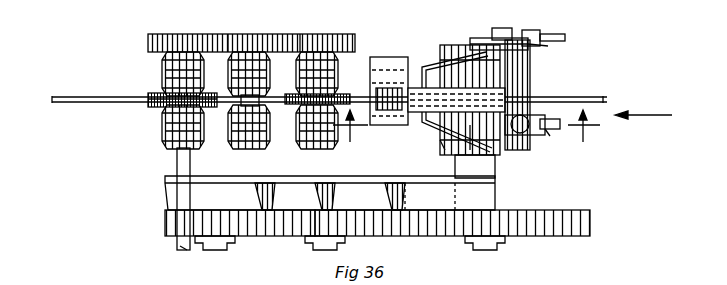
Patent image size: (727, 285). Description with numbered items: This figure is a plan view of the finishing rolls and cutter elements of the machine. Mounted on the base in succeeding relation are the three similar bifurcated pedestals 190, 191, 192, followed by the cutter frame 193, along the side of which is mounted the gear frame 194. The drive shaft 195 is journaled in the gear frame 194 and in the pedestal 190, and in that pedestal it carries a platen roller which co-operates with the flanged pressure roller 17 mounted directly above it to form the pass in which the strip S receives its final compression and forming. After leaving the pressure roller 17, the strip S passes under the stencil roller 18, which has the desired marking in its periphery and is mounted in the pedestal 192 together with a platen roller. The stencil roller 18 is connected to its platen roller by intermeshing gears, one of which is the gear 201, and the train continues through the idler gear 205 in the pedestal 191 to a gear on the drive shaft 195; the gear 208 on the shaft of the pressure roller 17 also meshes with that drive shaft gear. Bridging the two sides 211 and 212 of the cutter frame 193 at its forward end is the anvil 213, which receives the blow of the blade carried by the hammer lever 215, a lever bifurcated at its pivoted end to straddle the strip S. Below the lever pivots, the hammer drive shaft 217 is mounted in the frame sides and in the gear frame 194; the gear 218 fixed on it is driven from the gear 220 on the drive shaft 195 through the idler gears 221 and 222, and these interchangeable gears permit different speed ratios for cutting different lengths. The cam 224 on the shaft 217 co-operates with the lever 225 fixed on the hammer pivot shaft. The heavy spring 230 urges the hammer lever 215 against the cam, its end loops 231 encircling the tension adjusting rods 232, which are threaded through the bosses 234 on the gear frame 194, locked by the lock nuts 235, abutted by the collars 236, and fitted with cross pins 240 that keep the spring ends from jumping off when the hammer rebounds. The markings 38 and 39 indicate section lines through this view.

The strip S is at (52, 99).
The flanged pressure roller 17 is at (160, 95).
The stencil roller 18 is at (343, 94).
The section line 38 is at (466, 137).
The section arrow 39 is at (655, 118).
The bifurcated pedestal 190 is at (166, 128).
The bifurcated pedestal 191 is at (242, 143).
The bifurcated pedestal 192 is at (312, 143).
The cutter frame 193 is at (438, 148).
The gear frame 194 is at (170, 196).
The drive shaft 195 is at (178, 160).
The gear 201 is at (304, 36).
The idler gear 205 is at (244, 36).
The gear 208 is at (168, 36).
The frame side 211 is at (528, 140).
The frame side 212 is at (524, 66).
The anvil 213 is at (399, 49).
The hammer lever 215 is at (522, 88).
The hammer drive shaft 217 is at (498, 245).
The gear 218 is at (572, 221).
The gear 220 is at (170, 222).
The idler gear 221 is at (240, 228).
The idler gear 222 is at (355, 228).
The cam 224 is at (470, 135).
The lever 225 is at (528, 76).
The heavy spring 230 is at (452, 45).
The spring loop 231 is at (530, 163).
The tension adjusting rod 232 is at (555, 46).
The boss 234 is at (502, 20).
The lock nut 235 is at (490, 38).
The collar 236 is at (536, 32).
The cross pin 240 is at (548, 38).